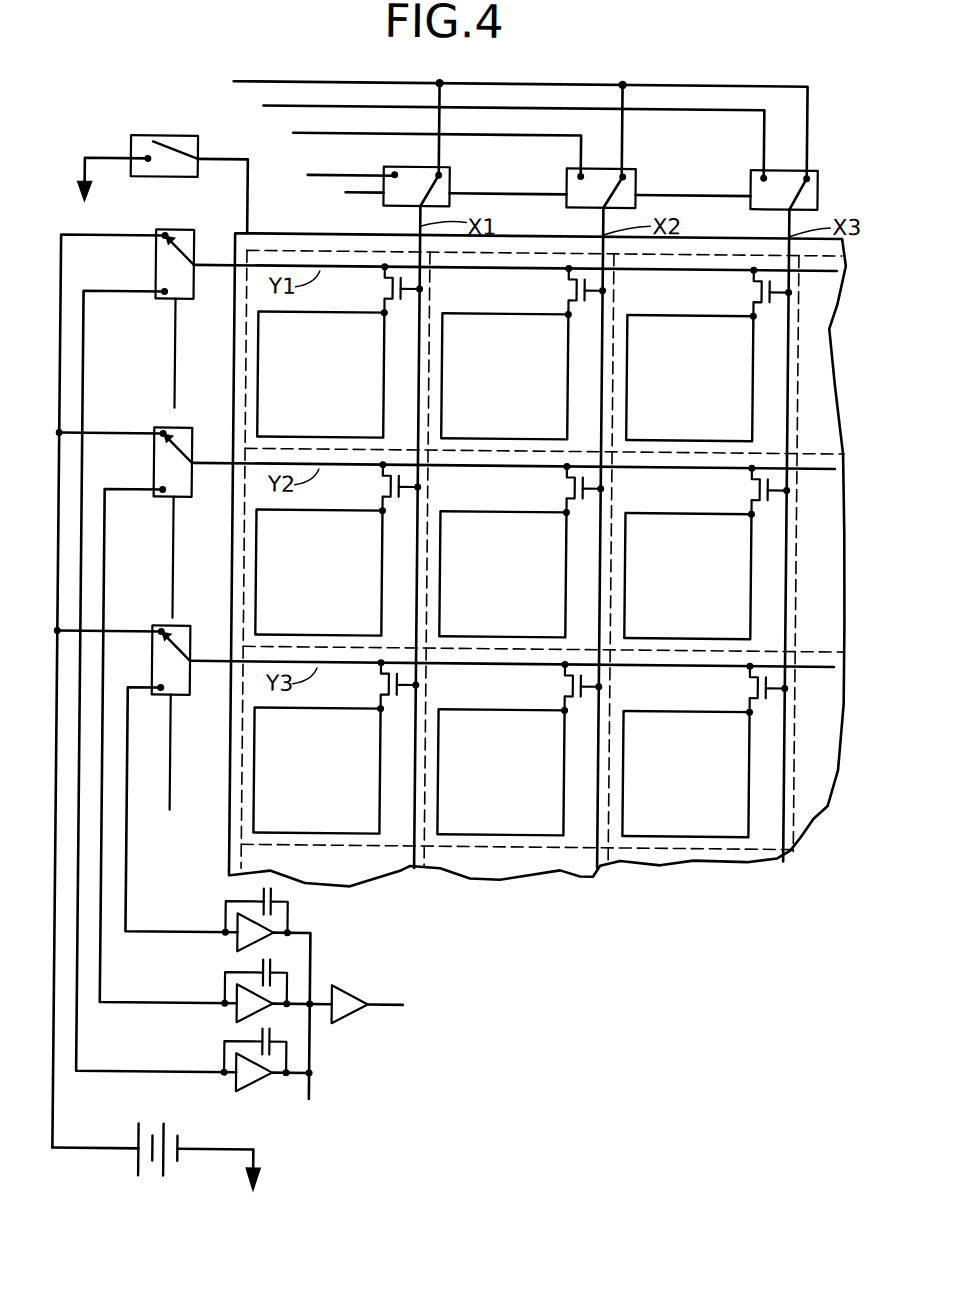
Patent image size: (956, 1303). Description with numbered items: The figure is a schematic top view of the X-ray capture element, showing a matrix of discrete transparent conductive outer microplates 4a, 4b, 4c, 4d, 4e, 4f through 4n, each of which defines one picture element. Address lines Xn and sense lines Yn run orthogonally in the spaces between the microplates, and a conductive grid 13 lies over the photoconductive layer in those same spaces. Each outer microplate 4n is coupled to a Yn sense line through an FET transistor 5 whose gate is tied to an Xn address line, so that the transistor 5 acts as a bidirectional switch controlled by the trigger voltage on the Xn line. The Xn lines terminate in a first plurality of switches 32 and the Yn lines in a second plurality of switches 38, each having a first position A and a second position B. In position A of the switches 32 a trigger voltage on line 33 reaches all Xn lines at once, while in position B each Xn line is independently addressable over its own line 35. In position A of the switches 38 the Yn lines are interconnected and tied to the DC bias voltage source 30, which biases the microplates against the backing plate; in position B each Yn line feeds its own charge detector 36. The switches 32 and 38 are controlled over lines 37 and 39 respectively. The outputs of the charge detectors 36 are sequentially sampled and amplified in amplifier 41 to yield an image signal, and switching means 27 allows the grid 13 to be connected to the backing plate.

The switching means 27 is at (168, 136).
The line 33 is at (504, 124).
The lines 35 is at (497, 145).
The lines 37 is at (716, 192).
The first plurality of switches 32 is at (604, 177).
The conductive grid 13 is at (313, 247).
The FET transistor 5 is at (378, 284).
The outer microplate 4a is at (320, 374).
The outer microplate 4b is at (504, 376).
The outer microplate 4c is at (689, 378).
The outer microplate 4d is at (318, 572).
The outer microplate 4e is at (502, 574).
The outer microplate 4f is at (687, 576).
The outer microplate 4n is at (501, 772).
The second plurality of switches 38 is at (173, 461).
The lines 39 is at (173, 350).
The charge detectors 36 is at (243, 940).
The amplifier 41 is at (352, 1021).
The DC bias voltage source 30 is at (150, 1182).